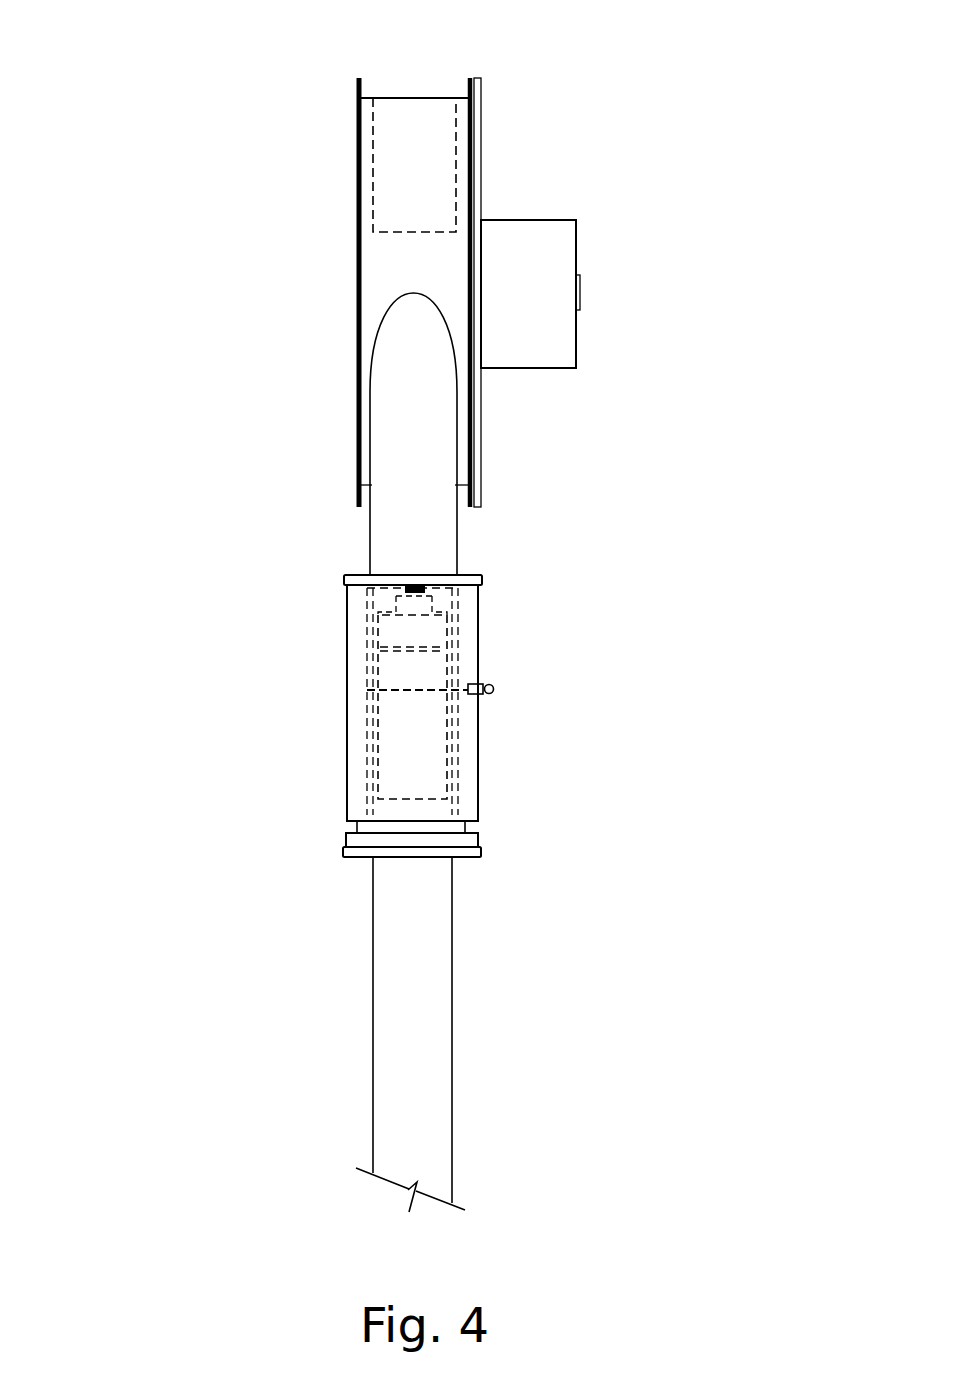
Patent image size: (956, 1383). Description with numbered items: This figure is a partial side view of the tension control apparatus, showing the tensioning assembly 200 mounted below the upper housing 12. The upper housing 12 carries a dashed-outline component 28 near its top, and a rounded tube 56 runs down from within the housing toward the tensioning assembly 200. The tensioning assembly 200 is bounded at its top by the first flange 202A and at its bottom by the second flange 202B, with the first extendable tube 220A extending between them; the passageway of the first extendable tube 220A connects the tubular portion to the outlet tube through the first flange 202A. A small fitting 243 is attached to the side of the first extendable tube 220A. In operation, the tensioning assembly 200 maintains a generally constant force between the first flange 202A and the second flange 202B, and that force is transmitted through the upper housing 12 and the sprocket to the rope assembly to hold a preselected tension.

The upper housing 12 is at (333, 291).
The drive motor housing 28 is at (456, 157).
The guide tube 56 is at (395, 301).
The tensioning assembly 200 is at (380, 859).
The first flange 202A is at (483, 578).
The second flange 202B is at (482, 850).
The first extendable tube 220A is at (246, 709).
The clamp fitting 243 is at (483, 682).